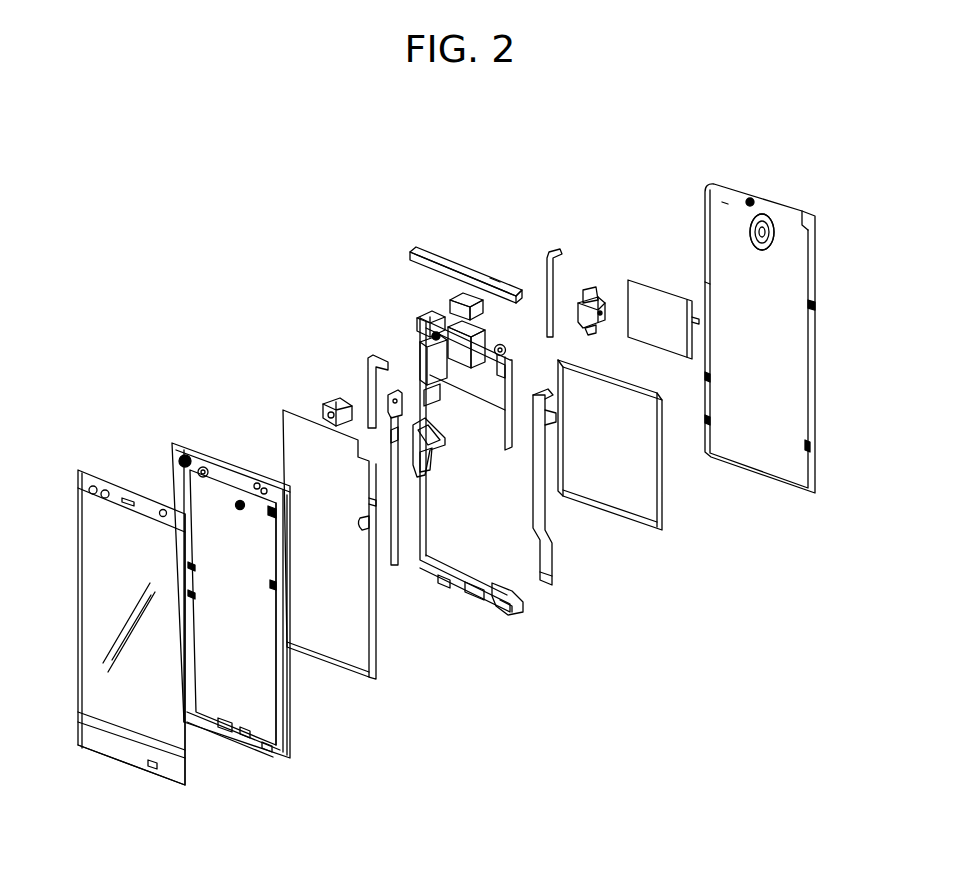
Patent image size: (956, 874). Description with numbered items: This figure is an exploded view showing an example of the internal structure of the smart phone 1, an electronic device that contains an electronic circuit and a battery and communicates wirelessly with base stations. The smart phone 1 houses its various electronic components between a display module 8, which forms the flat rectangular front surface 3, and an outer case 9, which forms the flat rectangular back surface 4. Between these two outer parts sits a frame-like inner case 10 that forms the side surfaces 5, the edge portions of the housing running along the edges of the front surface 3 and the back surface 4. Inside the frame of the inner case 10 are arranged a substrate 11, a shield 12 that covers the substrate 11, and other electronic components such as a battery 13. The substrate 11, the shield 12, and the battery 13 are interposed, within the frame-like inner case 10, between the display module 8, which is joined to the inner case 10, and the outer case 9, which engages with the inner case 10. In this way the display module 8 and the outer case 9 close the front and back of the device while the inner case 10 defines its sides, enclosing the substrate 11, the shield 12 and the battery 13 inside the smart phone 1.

The smart phone 1 is at (248, 275).
The front surface 3 is at (113, 750).
The back surface 4 is at (745, 194).
The side surfaces 5 is at (291, 720).
The display module 8 is at (187, 790).
The outer case 9 is at (806, 495).
The inner case 10 is at (283, 762).
The substrate 11 is at (509, 450).
The shield 12 is at (372, 680).
The battery 13 is at (656, 533).